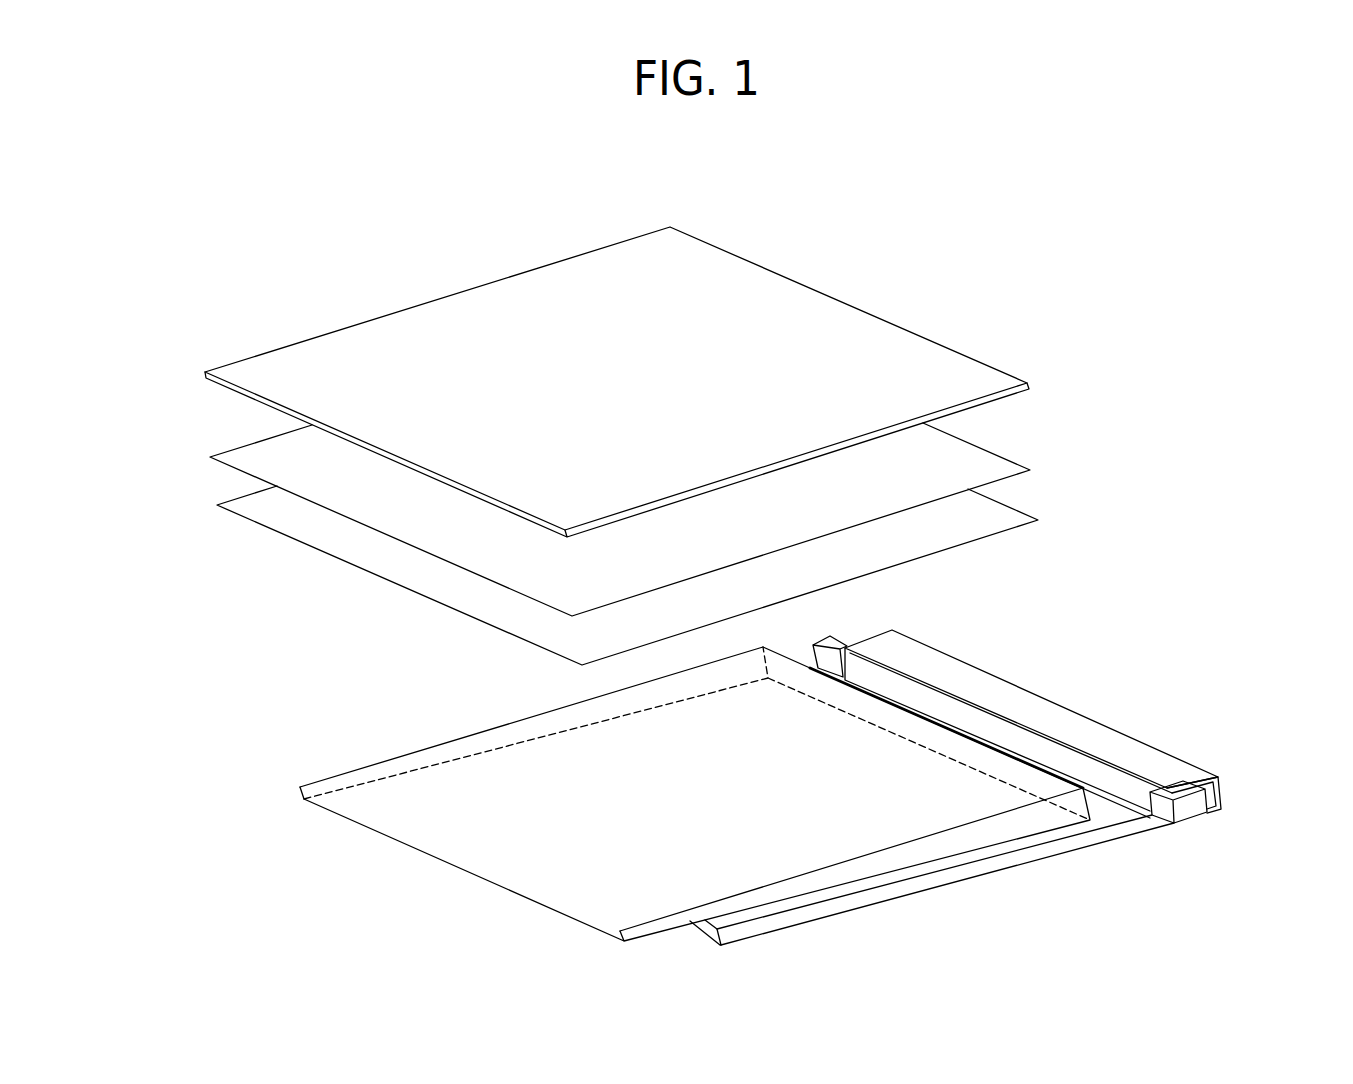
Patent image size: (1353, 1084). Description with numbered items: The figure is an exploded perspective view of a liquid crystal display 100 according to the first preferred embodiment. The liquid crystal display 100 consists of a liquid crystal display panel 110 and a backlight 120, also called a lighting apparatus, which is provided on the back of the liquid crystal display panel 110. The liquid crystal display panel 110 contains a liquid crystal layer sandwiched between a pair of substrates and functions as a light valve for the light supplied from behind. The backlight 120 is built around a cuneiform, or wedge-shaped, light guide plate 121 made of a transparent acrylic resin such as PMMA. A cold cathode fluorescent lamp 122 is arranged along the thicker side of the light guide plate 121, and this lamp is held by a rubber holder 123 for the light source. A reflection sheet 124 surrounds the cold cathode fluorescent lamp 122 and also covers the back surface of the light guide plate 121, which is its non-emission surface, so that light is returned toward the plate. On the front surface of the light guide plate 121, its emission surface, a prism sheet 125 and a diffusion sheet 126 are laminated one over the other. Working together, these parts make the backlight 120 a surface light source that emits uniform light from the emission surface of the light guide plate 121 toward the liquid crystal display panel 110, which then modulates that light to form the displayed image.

The liquid crystal display 100 is at (1083, 232).
The liquid crystal display panel 110 is at (850, 320).
The backlight 120 is at (190, 427).
The light guide plate 121 is at (485, 847).
The cold cathode fluorescent lamp 122 is at (1133, 793).
The rubber holder 123 is at (840, 638).
The reflection sheet 124 is at (1023, 702).
The prism sheet 125 is at (973, 520).
The diffusion sheet 126 is at (973, 460).